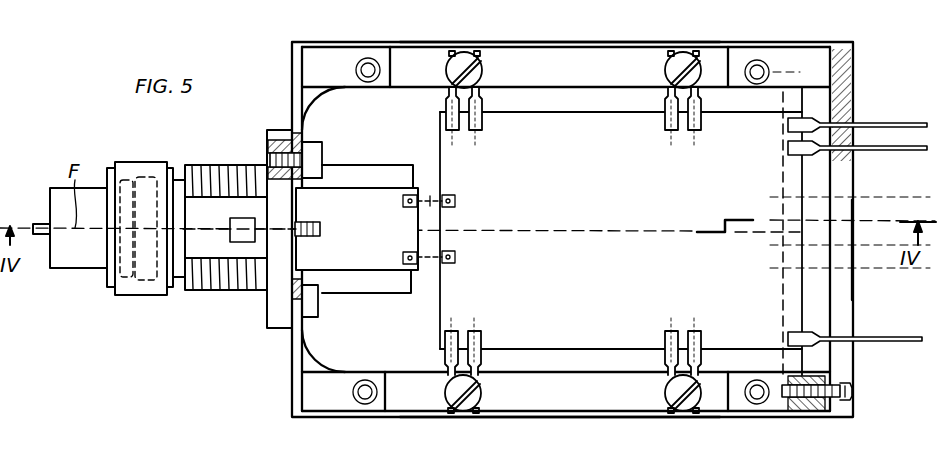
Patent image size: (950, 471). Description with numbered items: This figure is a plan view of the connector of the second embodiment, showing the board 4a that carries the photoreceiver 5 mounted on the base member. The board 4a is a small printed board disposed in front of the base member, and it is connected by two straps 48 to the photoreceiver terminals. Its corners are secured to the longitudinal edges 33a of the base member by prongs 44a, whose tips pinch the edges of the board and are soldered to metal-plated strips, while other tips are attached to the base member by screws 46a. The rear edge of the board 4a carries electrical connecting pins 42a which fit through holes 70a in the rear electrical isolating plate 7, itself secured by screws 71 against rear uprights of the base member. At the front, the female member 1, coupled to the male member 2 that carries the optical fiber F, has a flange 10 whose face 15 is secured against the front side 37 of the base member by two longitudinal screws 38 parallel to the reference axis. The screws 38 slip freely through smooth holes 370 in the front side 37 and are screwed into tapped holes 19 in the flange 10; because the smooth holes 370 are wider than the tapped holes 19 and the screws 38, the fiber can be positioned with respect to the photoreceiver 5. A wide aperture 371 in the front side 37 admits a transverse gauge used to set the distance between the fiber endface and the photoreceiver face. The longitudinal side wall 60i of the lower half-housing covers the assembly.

The female member 1 is at (217, 284).
The male member 2 is at (122, 296).
The intermediate board 4a is at (392, 262).
The photoreceiver 5 is at (305, 231).
The electrical isolating plate 7 is at (848, 256).
The flange 10 is at (283, 131).
The face 15 is at (288, 208).
The tapped holes 19 is at (270, 158).
The longitudinal edges 33a is at (636, 417).
The front side 37 is at (295, 356).
The longitudinal screws 38 is at (322, 144).
The electrical connecting pins 42a is at (903, 115).
The prongs 44a is at (667, 122).
The screws 46a is at (683, 58).
The straps 48 is at (430, 198).
The longitudinal side wall 60i is at (570, 44).
The holes 70a is at (848, 157).
The screws 71 is at (850, 397).
The smooth holes 370 is at (299, 135).
The wide aperture 371 is at (312, 182).